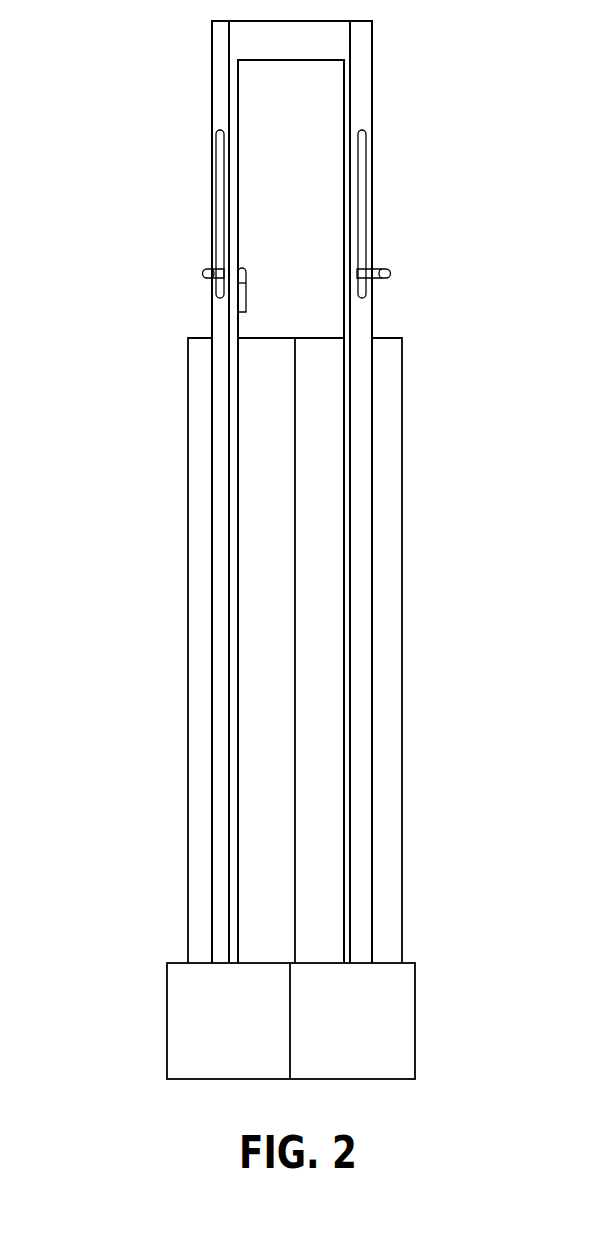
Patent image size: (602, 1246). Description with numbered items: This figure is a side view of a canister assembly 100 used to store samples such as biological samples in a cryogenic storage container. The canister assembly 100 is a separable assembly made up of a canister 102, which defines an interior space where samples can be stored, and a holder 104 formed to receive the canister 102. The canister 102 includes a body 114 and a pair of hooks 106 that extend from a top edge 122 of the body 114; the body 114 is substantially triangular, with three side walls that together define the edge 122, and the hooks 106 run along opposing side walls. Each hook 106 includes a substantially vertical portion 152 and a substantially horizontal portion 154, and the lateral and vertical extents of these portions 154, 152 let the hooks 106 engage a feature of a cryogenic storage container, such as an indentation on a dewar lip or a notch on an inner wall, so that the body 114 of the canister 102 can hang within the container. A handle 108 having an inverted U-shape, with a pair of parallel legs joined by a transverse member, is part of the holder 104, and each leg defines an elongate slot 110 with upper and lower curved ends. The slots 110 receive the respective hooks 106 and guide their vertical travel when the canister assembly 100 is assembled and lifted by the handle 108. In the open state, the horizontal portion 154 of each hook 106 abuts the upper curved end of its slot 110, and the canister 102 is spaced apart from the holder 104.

The canister assembly 100 is at (160, 104).
The canister 102 is at (190, 490).
The holder 104 is at (167, 1050).
The hooks 106 is at (391, 275).
The handle 108 is at (358, 75).
The slot 110 is at (361, 212).
The body 114 is at (295, 650).
The top edge 122 is at (200, 337).
The vertical portion 152 is at (246, 306).
The horizontal portion 154 is at (202, 274).